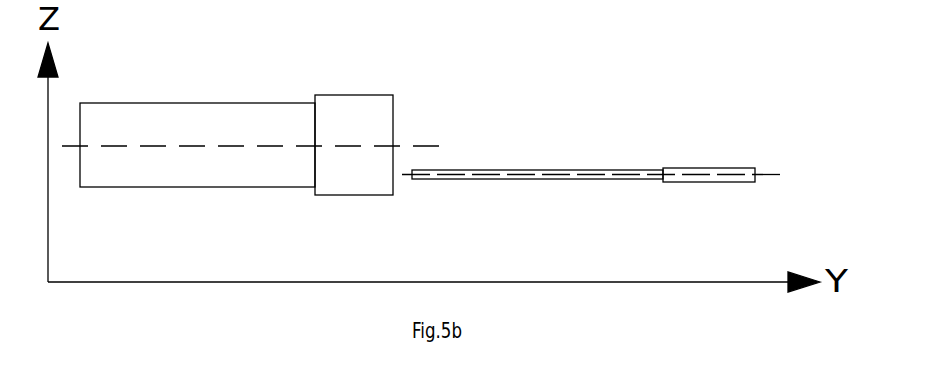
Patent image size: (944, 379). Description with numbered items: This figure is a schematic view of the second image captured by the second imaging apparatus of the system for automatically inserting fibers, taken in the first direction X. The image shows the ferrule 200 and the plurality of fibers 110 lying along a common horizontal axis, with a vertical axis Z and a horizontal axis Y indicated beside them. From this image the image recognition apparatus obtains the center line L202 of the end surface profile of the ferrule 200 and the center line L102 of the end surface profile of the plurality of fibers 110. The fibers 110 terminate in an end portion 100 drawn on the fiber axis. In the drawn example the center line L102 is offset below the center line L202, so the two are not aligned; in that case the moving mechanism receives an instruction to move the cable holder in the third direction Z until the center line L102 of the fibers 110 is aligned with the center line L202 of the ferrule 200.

The ferrule 200 is at (257, 115).
The center line of the ferrule L202 is at (289, 144).
The plurality of fibers 110 is at (548, 181).
The fiber connector 100 is at (696, 172).
The center line of the plurality of fibers L102 is at (632, 174).